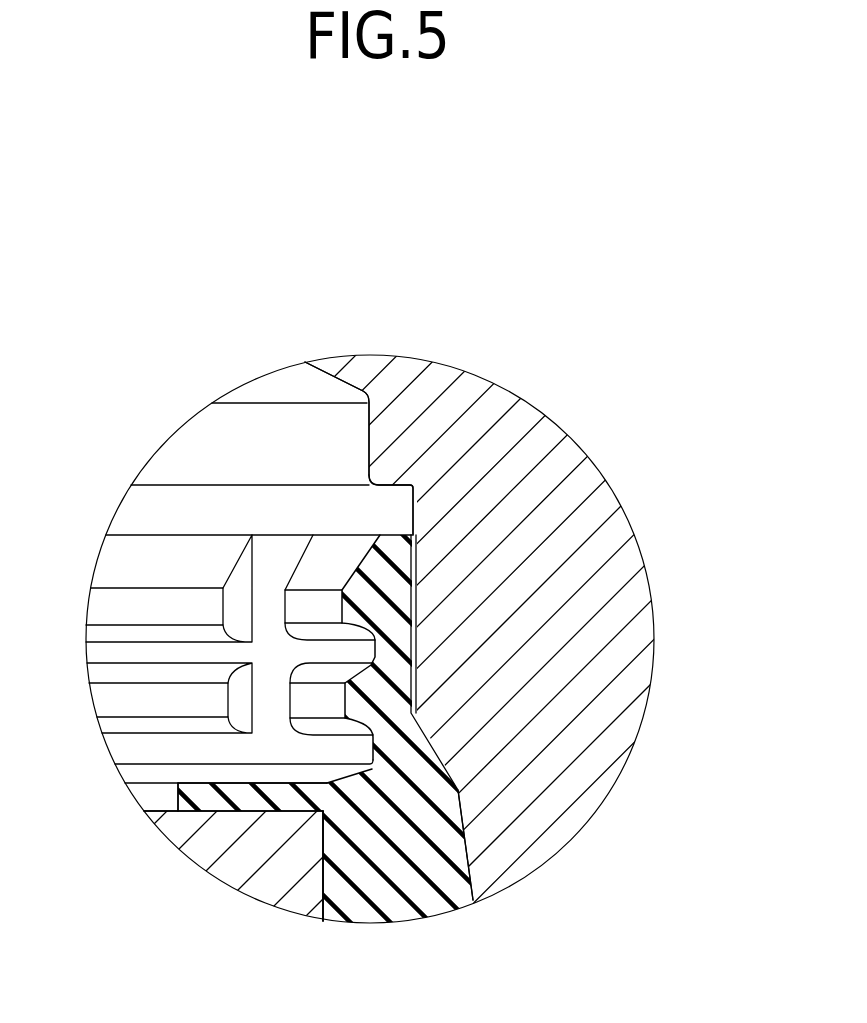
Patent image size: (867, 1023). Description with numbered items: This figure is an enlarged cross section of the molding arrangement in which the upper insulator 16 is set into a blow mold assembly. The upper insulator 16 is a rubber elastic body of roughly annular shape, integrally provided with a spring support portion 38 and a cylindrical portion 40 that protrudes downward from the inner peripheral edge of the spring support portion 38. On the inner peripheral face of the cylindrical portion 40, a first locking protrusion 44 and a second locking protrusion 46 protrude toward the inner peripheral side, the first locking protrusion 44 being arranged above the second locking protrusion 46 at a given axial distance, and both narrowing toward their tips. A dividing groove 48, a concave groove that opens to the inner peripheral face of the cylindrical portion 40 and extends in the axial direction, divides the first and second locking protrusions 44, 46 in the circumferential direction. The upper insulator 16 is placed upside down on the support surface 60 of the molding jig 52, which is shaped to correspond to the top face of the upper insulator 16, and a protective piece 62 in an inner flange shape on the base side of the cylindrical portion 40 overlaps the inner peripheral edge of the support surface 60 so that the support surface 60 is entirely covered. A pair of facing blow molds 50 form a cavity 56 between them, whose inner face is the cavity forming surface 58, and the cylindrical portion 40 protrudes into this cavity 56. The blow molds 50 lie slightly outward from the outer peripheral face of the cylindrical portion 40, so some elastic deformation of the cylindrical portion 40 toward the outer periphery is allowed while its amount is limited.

The upper insulator 16 is at (485, 823).
The spring support portion 38 is at (427, 877).
The cylindrical portion 40 is at (395, 652).
The first locking protrusion 44 is at (132, 700).
The second locking protrusion 46 is at (135, 603).
The dividing groove 48 is at (292, 568).
The blow mold 50 is at (543, 453).
The molding jig 52 is at (298, 872).
The cavity 56 is at (400, 513).
The cavity forming surface 58 is at (365, 427).
The support surface 60 is at (292, 812).
The protective piece 62 is at (198, 798).